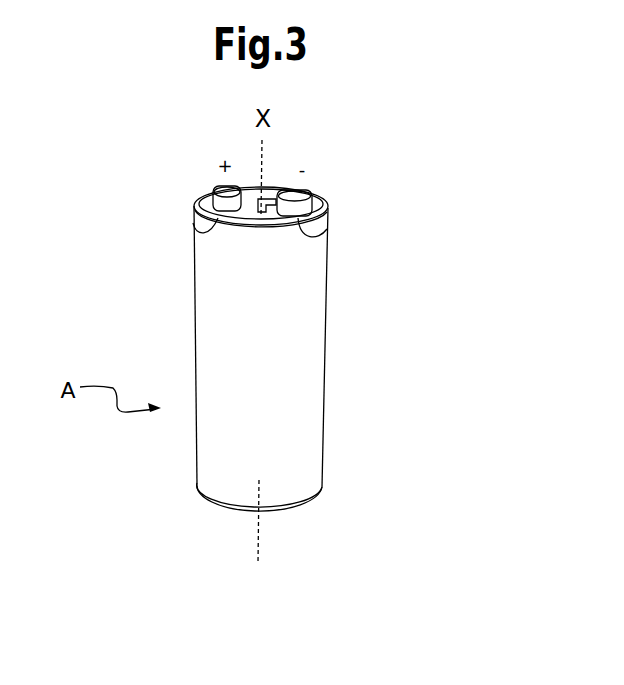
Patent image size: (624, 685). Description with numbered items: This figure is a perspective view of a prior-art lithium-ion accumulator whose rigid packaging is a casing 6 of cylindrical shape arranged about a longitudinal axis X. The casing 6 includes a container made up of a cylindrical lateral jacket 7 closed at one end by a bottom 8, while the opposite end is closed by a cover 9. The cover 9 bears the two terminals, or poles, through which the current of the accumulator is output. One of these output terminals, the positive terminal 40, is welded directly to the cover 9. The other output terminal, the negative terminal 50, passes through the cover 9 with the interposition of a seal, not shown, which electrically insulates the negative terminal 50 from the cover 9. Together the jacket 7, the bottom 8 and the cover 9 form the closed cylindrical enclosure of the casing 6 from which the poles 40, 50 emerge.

The casing 6 is at (323, 330).
The cylindrical lateral jacket 7 is at (323, 412).
The bottom 8 is at (218, 505).
The cover 9 is at (327, 200).
The positive terminal 40 is at (194, 232).
The negative terminal 50 is at (328, 238).